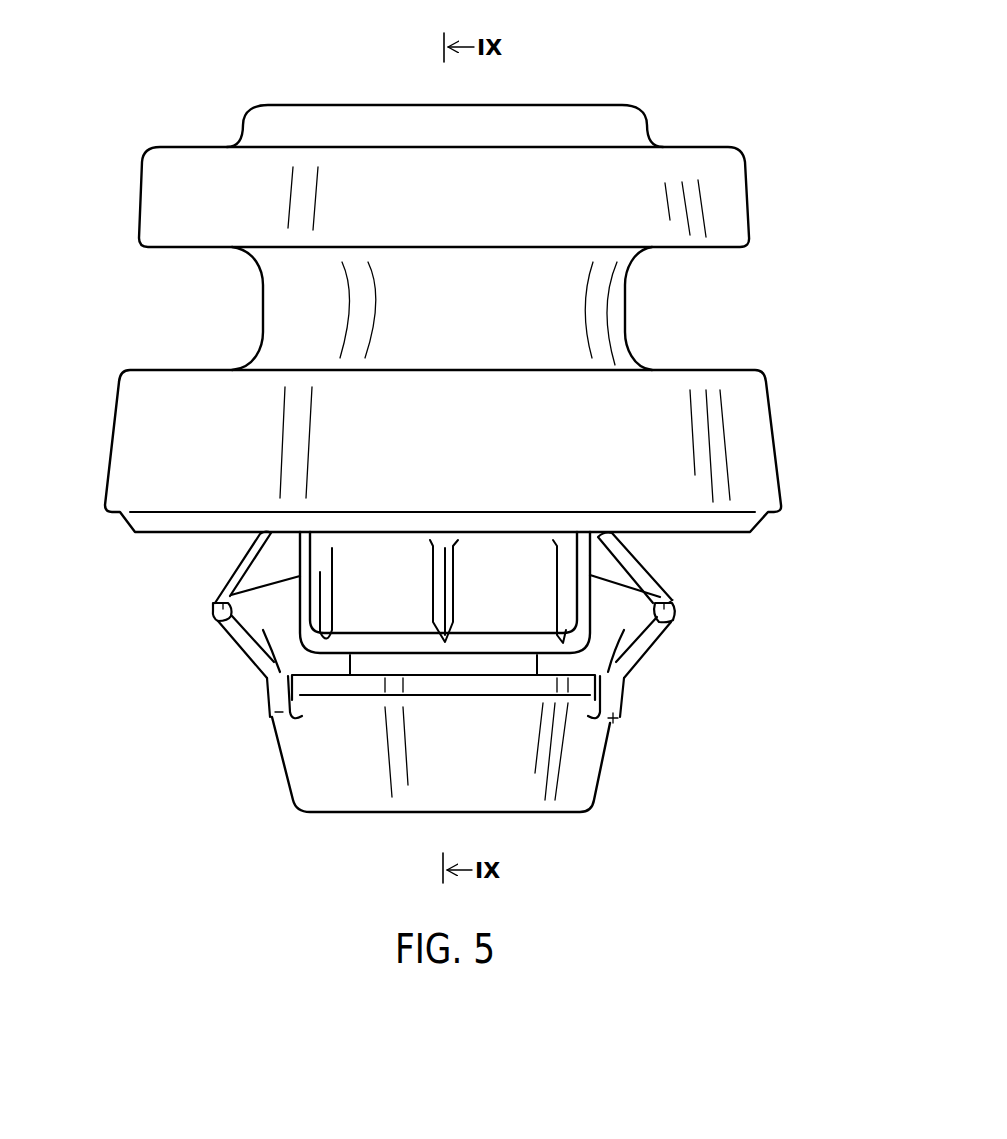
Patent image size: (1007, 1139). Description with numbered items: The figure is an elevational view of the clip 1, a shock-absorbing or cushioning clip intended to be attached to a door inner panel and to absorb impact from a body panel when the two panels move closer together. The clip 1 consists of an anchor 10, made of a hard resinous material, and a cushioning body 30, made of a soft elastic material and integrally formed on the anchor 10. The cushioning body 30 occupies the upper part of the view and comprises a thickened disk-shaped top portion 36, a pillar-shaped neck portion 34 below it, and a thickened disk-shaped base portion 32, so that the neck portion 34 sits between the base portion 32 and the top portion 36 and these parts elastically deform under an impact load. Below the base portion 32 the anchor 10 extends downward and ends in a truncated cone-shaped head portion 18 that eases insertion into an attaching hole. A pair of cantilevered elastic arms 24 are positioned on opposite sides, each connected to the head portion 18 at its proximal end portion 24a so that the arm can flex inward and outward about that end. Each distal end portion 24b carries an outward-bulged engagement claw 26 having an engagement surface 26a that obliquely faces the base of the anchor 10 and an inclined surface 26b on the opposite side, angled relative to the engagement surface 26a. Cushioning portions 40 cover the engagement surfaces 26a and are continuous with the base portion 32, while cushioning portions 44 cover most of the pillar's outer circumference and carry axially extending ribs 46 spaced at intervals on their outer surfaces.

The clip 1 is at (790, 243).
The anchor 10 is at (240, 790).
The head portion 18 is at (384, 770).
The elastic arms 24 is at (265, 673).
The proximal end portions 24a is at (613, 718).
The distal end portions 24b is at (673, 600).
The engagement claws 26 is at (212, 609).
The engagement surfaces 26a is at (267, 582).
The inclined surfaces 26b is at (228, 635).
The cushioning body 30 is at (760, 157).
The base portion 32 is at (150, 447).
The neck portion 34 is at (543, 312).
The top portion 36 is at (185, 200).
The cushioning portions 40 is at (277, 555).
The cushioning portions 44 is at (395, 578).
The ribs 46 is at (318, 573).